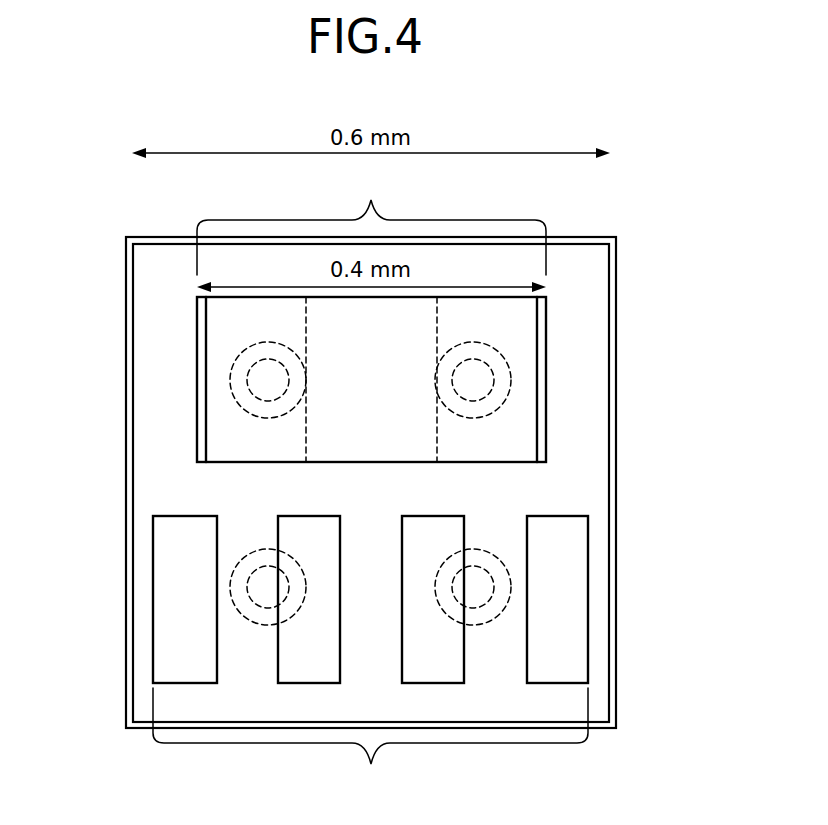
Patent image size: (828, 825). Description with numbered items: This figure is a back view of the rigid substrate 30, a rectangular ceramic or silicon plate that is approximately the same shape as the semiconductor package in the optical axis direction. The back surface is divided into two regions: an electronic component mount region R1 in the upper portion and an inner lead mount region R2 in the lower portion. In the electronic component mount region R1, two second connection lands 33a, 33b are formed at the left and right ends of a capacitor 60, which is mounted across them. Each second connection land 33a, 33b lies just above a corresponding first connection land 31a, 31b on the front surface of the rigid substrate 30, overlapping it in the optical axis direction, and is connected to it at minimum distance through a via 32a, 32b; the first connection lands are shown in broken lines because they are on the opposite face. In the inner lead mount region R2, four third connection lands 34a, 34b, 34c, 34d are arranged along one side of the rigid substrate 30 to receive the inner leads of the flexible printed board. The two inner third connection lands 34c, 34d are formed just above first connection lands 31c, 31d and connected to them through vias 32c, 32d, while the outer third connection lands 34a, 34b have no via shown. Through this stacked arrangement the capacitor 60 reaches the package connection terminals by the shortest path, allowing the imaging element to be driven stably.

The rigid substrate 30 is at (577, 270).
The capacitor 60 is at (508, 323).
The second connection land 33a is at (197, 325).
The second connection land 33b is at (546, 362).
The first connection land 31a is at (230, 381).
The first connection land 31b is at (510, 385).
The first connection land 31c is at (230, 587).
The first connection land 31d is at (510, 587).
The via 32a is at (266, 401).
The via 32b is at (473, 401).
The via 32c is at (258, 564).
The via 32d is at (479, 566).
The third connection land 34a is at (163, 606).
The third connection land 34b is at (572, 606).
The third connection land 34c is at (292, 646).
The third connection land 34d is at (448, 653).
The electronic component mount region R1 is at (371, 223).
The inner lead mount region R2 is at (370, 742).